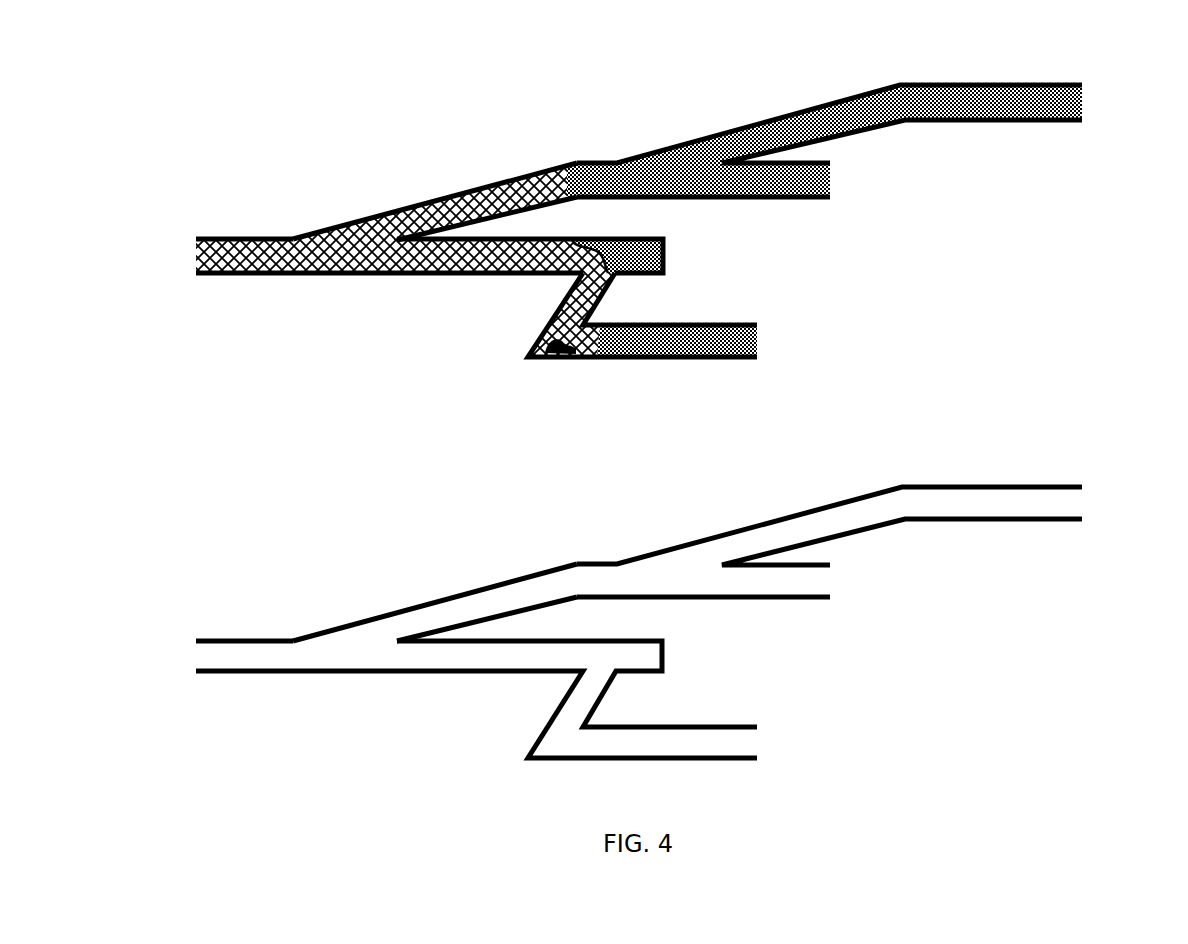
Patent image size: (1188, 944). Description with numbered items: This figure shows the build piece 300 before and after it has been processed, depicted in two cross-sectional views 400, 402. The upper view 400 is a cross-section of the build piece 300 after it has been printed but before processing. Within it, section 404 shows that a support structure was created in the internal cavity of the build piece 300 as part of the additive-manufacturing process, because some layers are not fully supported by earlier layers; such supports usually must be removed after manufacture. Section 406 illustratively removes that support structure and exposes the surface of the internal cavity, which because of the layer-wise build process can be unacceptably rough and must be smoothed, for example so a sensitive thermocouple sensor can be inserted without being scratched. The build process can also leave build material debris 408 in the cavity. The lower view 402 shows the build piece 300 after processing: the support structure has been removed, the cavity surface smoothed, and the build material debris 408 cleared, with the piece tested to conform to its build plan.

The build piece 300 is at (478, 190).
The cross-sectional view 400 is at (664, 202).
The cross-sectional view 402 is at (1125, 485).
The section 404 is at (203, 231).
The section 406 is at (801, 95).
The build material debris 408 is at (540, 339).